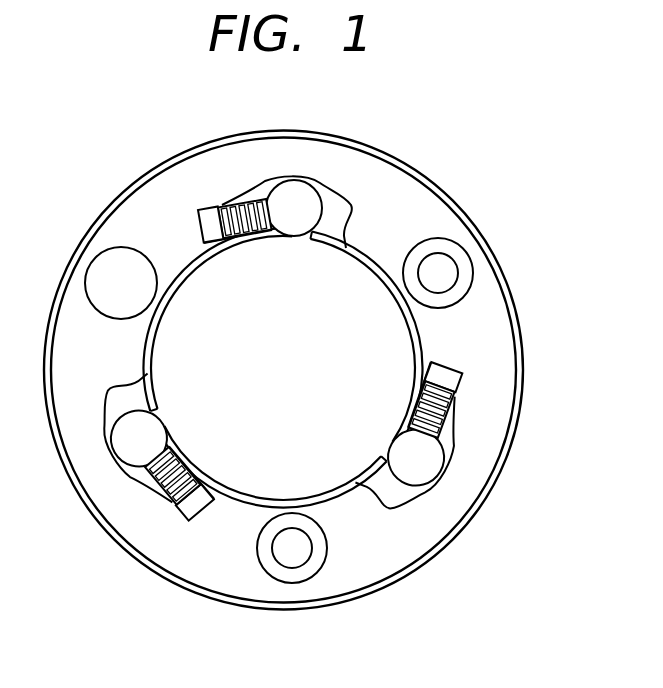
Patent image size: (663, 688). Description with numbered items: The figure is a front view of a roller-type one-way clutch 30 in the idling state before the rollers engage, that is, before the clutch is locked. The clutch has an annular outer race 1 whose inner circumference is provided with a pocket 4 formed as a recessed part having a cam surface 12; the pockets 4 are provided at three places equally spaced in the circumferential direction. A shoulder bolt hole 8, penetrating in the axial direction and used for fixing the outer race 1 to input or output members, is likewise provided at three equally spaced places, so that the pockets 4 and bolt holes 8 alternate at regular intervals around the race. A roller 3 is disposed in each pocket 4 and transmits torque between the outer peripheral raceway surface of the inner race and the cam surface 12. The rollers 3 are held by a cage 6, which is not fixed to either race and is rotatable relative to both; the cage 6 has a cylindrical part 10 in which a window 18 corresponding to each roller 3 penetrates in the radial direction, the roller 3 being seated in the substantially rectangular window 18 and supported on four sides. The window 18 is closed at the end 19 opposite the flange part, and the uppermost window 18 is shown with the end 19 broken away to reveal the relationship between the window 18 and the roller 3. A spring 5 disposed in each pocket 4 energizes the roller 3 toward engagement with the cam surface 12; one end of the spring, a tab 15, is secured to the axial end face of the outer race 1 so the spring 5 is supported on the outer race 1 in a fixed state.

The outer race 1 is at (130, 212).
The roller 3 is at (303, 190).
The pocket 4 is at (266, 180).
The spring 5 is at (215, 200).
The cage 6 is at (359, 368).
The shoulder bolt hole 8 is at (310, 560).
The cylindrical part 10 is at (183, 283).
The cam surface 12 is at (343, 163).
The tab 15 is at (212, 232).
The window 18 is at (309, 242).
The end 19 is at (148, 352).
The roller-type one-way clutch 30 is at (302, 348).